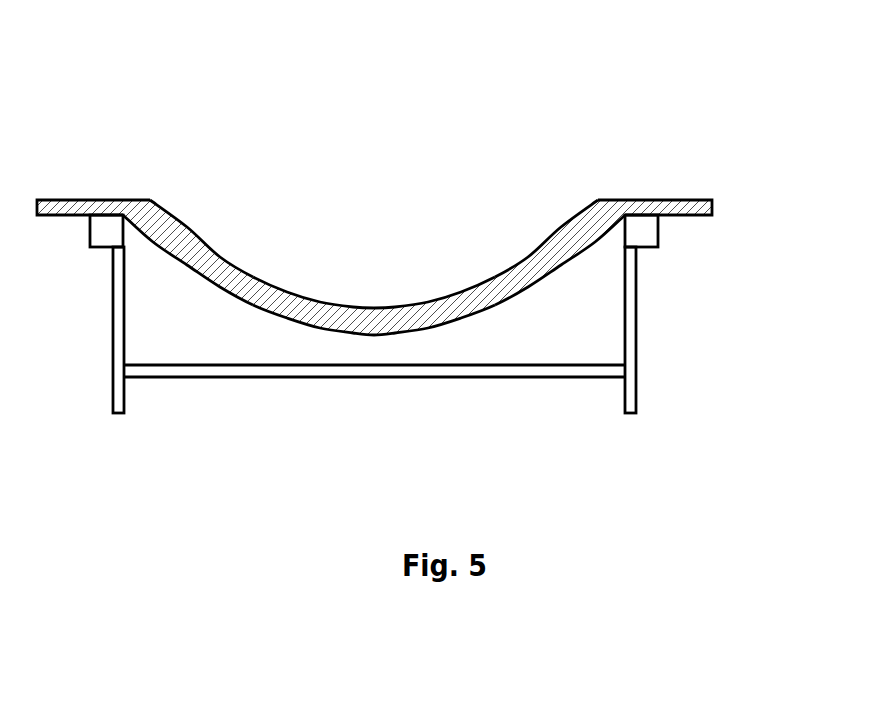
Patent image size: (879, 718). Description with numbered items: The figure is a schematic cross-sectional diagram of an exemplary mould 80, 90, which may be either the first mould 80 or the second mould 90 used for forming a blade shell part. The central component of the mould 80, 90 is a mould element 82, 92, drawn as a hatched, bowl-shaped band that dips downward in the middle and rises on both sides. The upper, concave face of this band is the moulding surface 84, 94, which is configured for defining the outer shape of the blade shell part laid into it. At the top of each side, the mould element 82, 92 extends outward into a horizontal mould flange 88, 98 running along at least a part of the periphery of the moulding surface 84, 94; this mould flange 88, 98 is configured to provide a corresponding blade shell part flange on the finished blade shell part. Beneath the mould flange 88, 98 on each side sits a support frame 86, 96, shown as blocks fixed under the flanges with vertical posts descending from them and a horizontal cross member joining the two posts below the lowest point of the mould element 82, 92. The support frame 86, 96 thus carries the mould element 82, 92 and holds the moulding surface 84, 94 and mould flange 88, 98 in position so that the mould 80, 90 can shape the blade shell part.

The mould 80 is at (420, 209).
The mould 90 is at (420, 209).
The mould element 82 is at (374, 251).
The mould element 92 is at (449, 253).
The moulding surface 84 is at (374, 243).
The moulding surface 94 is at (218, 254).
The support frame 86 is at (450, 314).
The support frame 96 is at (680, 255).
The mould flange 88 is at (376, 153).
The mould flange 98 is at (665, 168).